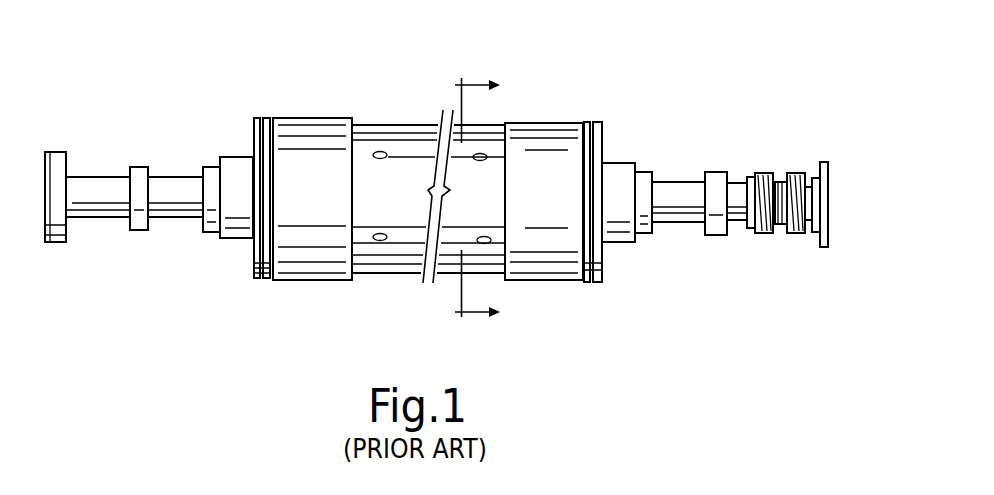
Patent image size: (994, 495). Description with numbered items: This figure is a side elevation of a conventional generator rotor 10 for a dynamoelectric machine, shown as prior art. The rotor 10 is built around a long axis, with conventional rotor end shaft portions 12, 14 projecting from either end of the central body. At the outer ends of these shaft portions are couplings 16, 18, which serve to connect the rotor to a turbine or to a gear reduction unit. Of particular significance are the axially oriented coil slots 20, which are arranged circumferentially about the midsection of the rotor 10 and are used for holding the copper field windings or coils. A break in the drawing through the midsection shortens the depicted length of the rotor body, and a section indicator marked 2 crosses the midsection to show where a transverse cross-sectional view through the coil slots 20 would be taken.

The rotor 10 is at (636, 117).
The rotor end shaft portion 12 is at (186, 188).
The rotor end shaft portion 14 is at (677, 190).
The coupling 16 is at (54, 152).
The coupling 18 is at (822, 163).
The axially oriented coil slots 20 is at (410, 147).
The section line 2- 2 is at (487, 198).